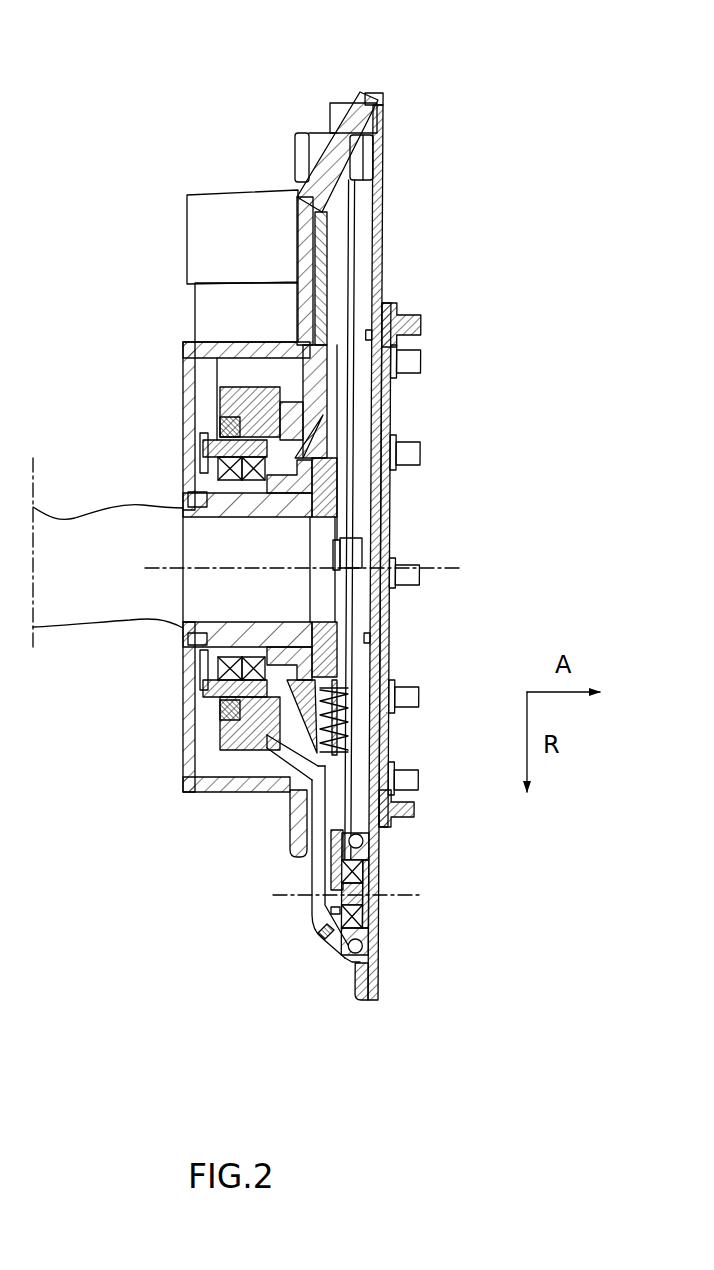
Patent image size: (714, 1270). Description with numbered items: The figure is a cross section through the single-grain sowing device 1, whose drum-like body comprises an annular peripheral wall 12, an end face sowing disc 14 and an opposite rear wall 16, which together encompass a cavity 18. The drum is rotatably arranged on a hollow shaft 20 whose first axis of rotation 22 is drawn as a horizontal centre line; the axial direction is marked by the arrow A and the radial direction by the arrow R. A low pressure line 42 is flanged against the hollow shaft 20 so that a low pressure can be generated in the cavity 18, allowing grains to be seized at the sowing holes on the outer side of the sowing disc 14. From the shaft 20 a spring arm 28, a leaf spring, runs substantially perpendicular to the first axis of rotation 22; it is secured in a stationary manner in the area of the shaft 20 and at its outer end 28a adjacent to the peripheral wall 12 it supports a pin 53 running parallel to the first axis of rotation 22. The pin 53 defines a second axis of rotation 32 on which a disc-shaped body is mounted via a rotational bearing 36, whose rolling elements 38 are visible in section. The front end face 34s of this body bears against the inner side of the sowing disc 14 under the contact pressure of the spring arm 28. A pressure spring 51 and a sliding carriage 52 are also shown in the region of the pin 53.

The single-grain sowing device 1 is at (424, 106).
The sowing disc 14 is at (382, 205).
The cavity 18 is at (355, 288).
The rear wall 16 is at (320, 287).
The shaft 20 is at (230, 500).
The first axis of rotation 22 is at (455, 560).
The low pressure line 42 is at (98, 590).
The spring arm 28 is at (333, 688).
The pressure spring 51 is at (347, 713).
The sliding carriage 52 is at (343, 757).
The pin 53 is at (327, 883).
The rotational bearing 36 is at (372, 845).
The second axis of rotation 32 is at (382, 870).
The front end face 34s is at (375, 936).
The lever end portion 28a is at (273, 947).
The annular peripheral wall 12 is at (338, 960).
The rolling element 38 is at (355, 953).